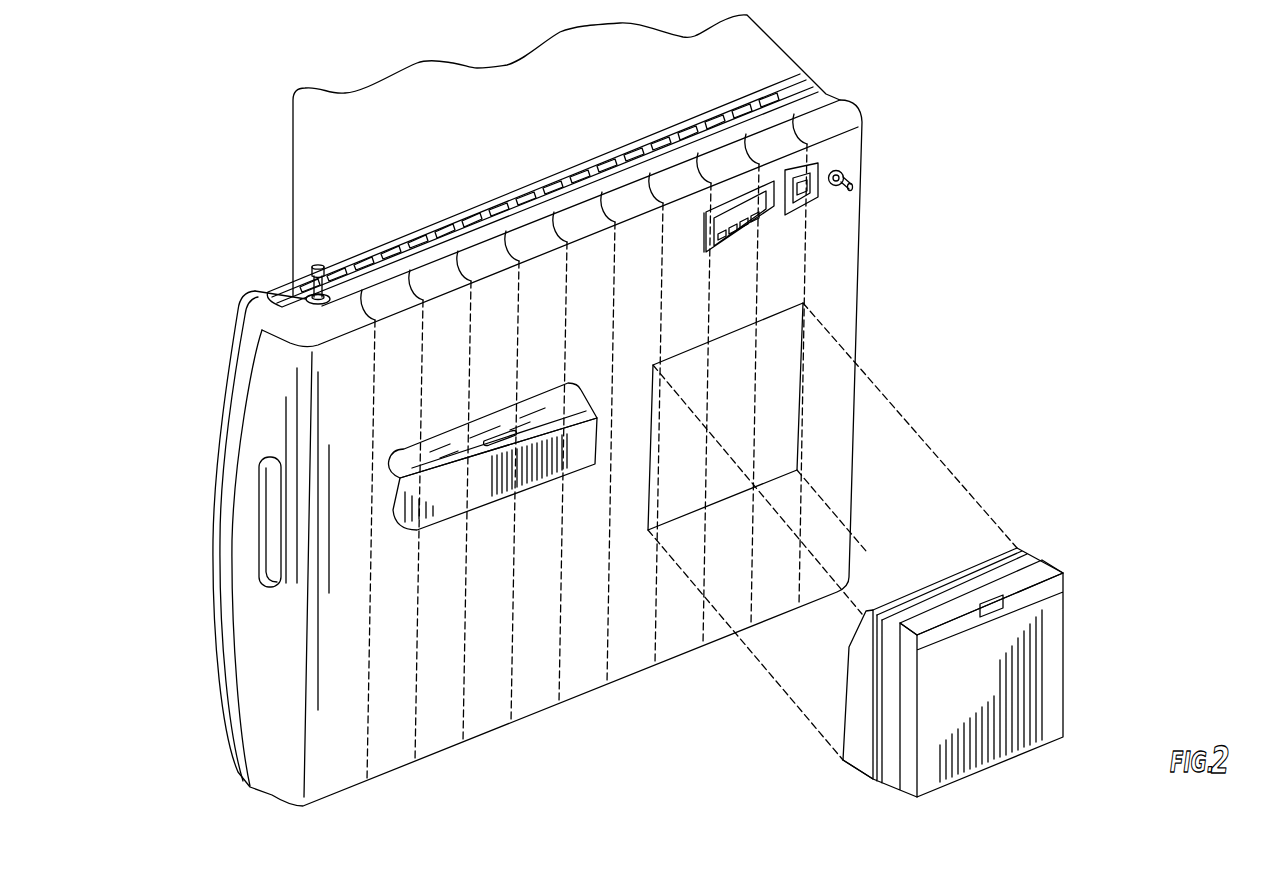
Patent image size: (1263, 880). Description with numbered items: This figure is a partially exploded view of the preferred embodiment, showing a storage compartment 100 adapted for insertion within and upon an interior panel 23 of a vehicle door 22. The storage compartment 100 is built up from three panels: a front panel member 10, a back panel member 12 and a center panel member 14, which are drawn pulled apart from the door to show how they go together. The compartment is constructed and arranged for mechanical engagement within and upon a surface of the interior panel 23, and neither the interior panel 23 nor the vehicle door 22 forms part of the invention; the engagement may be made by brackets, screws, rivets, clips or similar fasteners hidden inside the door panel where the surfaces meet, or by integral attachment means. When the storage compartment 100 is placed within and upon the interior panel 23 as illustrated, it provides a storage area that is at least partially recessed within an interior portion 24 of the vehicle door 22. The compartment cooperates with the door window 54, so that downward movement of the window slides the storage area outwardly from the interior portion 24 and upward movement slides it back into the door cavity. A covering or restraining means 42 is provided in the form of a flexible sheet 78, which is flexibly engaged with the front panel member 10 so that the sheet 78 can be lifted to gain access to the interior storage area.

The front panel member 10 is at (907, 780).
The back panel member 12 is at (1038, 550).
The center panel member 14 is at (860, 735).
The vehicle door 22 is at (833, 97).
The interior panel 23 is at (838, 262).
The interior portion 24 is at (781, 347).
The covering or restraining means 42 is at (1060, 618).
The door window 54 is at (318, 195).
The flexible sheet 78 is at (1052, 656).
The storage compartment 100 is at (1097, 555).